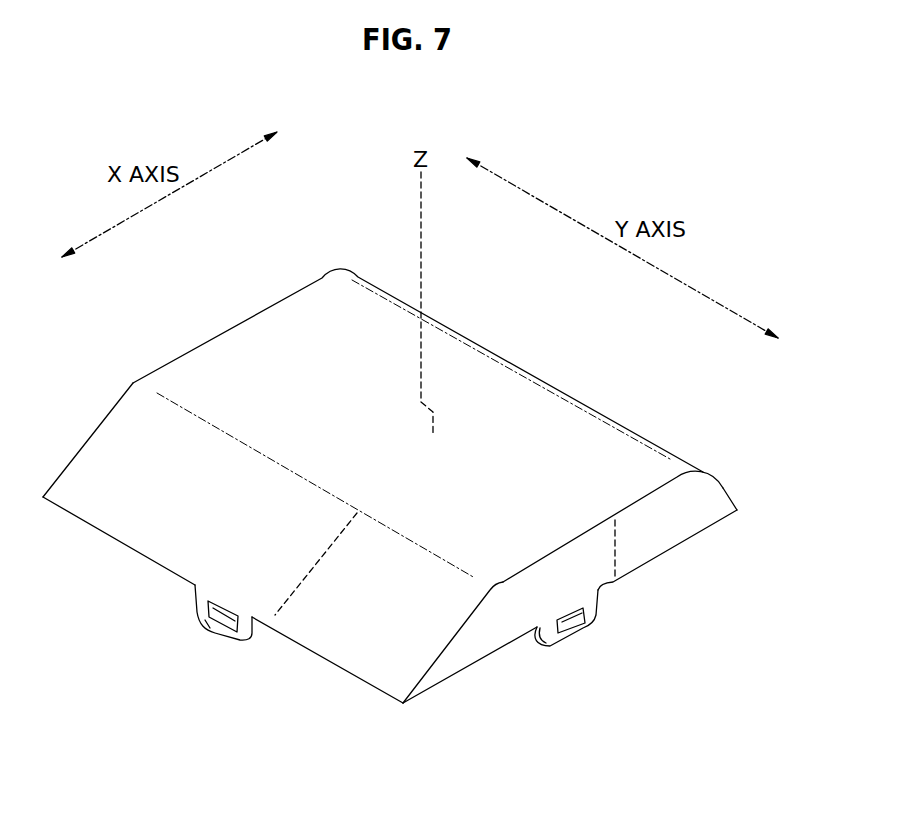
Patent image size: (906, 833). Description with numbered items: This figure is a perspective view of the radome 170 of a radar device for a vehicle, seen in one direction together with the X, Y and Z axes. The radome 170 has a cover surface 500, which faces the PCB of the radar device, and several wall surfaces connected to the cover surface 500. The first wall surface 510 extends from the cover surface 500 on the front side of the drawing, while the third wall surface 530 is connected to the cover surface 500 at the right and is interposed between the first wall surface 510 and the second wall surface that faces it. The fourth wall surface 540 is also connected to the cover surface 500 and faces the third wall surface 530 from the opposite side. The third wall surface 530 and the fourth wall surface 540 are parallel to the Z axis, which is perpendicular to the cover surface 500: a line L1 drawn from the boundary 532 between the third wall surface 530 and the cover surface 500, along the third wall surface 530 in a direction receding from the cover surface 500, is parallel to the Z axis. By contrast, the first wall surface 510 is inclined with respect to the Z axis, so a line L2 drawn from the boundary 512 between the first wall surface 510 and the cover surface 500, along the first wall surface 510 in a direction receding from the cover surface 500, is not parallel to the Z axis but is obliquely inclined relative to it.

The radome 170 is at (618, 195).
The cover surface 500 is at (570, 448).
The first wall surface 510 is at (385, 618).
The boundary 512 is at (223, 433).
The third wall surface 530 is at (637, 545).
The boundary 532 is at (638, 493).
The fourth wall surface 540 is at (230, 315).
The line L1 is at (617, 557).
The line L2 is at (313, 570).